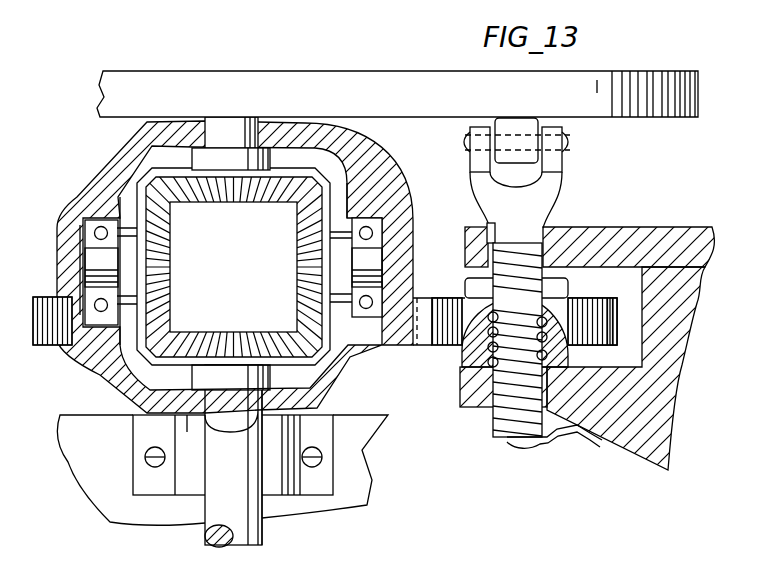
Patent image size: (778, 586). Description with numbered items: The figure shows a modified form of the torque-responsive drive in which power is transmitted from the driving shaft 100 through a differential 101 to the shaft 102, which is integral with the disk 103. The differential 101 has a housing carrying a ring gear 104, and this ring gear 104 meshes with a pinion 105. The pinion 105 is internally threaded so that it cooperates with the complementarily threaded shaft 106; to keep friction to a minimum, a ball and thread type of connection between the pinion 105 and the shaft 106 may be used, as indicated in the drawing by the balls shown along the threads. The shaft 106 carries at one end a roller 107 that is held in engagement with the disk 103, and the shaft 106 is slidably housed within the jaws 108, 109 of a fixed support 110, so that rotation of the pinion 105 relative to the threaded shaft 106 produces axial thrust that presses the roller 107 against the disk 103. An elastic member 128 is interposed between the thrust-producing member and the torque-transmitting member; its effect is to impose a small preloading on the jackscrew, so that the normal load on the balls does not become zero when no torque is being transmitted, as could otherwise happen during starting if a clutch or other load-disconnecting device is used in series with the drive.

The driving shaft 100 is at (204, 527).
The differential 101 is at (100, 368).
The shaft 102 is at (229, 131).
The disk 103 is at (333, 88).
The ring gear 104 is at (44, 308).
The pinion 105 is at (619, 285).
The threaded shaft 106 is at (492, 428).
The roller 107 is at (502, 152).
The jaw 108 is at (620, 237).
The jaw 109 is at (462, 383).
The fixed support 110 is at (693, 303).
The elastic member 128 is at (555, 443).